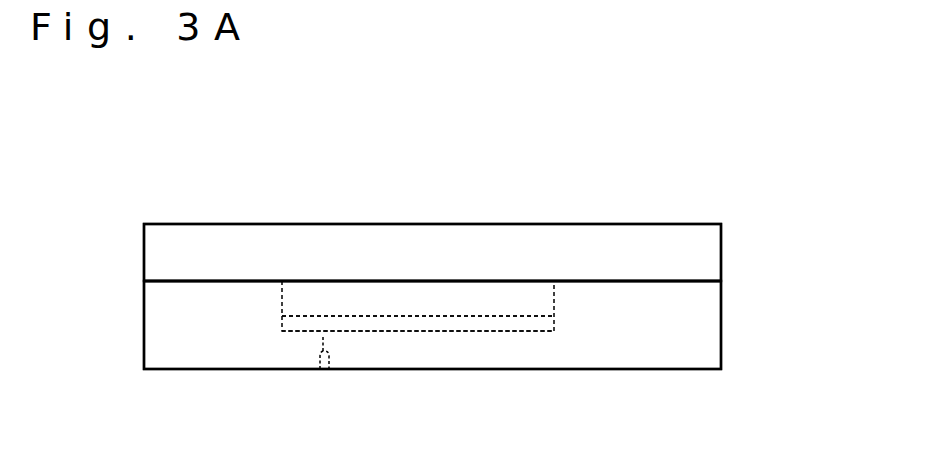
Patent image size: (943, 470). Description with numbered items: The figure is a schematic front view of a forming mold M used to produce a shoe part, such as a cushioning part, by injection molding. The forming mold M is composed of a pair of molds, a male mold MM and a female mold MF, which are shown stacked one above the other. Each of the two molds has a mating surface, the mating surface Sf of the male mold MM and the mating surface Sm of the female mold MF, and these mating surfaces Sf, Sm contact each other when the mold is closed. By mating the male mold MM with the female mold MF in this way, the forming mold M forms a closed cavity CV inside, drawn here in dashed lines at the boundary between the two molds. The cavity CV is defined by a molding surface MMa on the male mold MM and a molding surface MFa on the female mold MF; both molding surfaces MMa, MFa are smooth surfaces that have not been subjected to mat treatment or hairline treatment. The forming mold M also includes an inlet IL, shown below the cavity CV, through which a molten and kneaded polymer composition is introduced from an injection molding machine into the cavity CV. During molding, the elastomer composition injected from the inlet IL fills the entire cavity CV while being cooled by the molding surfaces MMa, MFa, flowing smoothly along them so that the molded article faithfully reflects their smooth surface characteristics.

The forming mold M is at (140, 152).
The male mold MM is at (717, 252).
The female mold MF is at (722, 333).
The mating surface Sf is at (604, 279).
The mating surface Sm is at (618, 283).
The cavity CV is at (392, 323).
The molding surface MFa is at (442, 316).
The molding surface MMa is at (470, 326).
The inlet IL is at (320, 369).